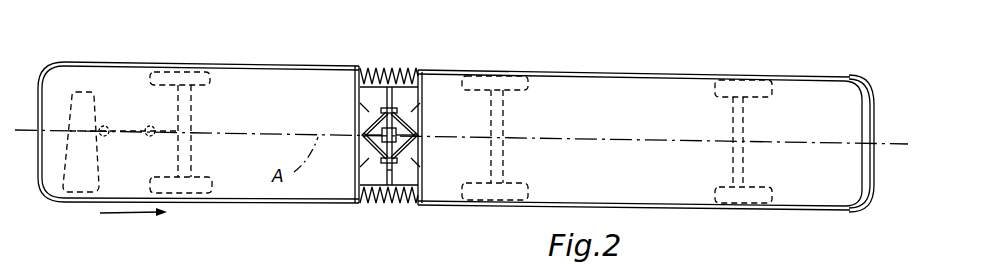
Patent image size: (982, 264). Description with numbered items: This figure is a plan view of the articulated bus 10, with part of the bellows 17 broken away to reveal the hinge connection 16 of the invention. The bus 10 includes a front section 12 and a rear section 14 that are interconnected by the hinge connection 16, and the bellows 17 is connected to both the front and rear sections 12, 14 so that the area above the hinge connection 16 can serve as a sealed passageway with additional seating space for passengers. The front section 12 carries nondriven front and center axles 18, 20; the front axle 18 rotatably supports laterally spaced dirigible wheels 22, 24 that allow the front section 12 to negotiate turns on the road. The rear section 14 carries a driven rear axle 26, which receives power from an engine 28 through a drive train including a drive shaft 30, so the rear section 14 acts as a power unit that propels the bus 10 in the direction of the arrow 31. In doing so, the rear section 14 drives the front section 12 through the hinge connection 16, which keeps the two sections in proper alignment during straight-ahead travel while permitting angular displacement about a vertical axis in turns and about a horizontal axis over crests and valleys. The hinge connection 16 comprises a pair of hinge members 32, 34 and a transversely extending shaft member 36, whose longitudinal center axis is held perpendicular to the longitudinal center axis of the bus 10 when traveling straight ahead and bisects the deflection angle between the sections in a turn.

The articulated bus 10 is at (536, 42).
The front section 12 is at (688, 70).
The rear section 14 is at (288, 62).
The hinge connection 16 is at (411, 97).
The bellows 17 is at (391, 67).
The front axle 18 is at (730, 143).
The center axle 20 is at (500, 134).
The dirigible wheel 22 is at (768, 88).
The dirigible wheel 24 is at (768, 192).
The rear axle 26 is at (199, 128).
The engine 28 is at (89, 118).
The drive shaft 30 is at (126, 128).
The arrow 31 is at (106, 214).
The hinge member 32 is at (355, 133).
The hinge member 34 is at (424, 137).
The shaft member 36 is at (390, 177).